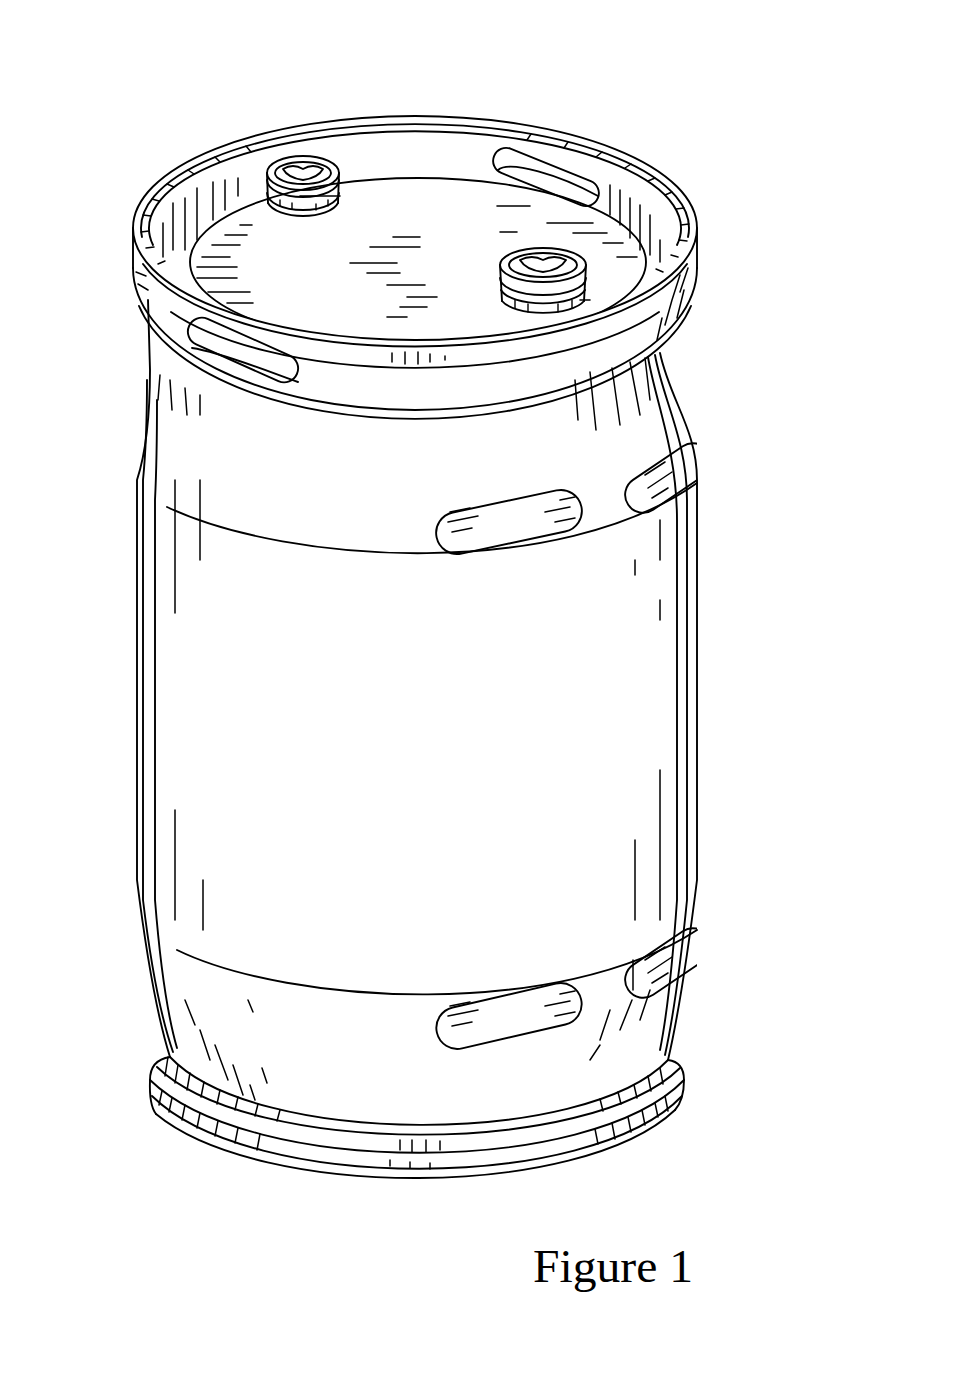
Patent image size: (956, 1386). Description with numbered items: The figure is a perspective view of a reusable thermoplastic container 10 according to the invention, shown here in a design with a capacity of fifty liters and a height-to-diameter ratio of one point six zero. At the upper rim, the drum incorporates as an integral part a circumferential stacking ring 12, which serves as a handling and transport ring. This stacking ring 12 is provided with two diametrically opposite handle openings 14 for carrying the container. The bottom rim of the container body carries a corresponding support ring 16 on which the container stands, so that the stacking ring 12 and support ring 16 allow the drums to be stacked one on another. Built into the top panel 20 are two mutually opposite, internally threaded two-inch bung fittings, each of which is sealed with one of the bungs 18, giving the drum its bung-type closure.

The reusable thermoplastic container 10 is at (748, 556).
The circumferential stacking ring 12 is at (685, 197).
The handle openings 14 is at (540, 162).
The support ring 16 is at (683, 1098).
The bungs 18 is at (303, 177).
The top panel 20 is at (427, 205).